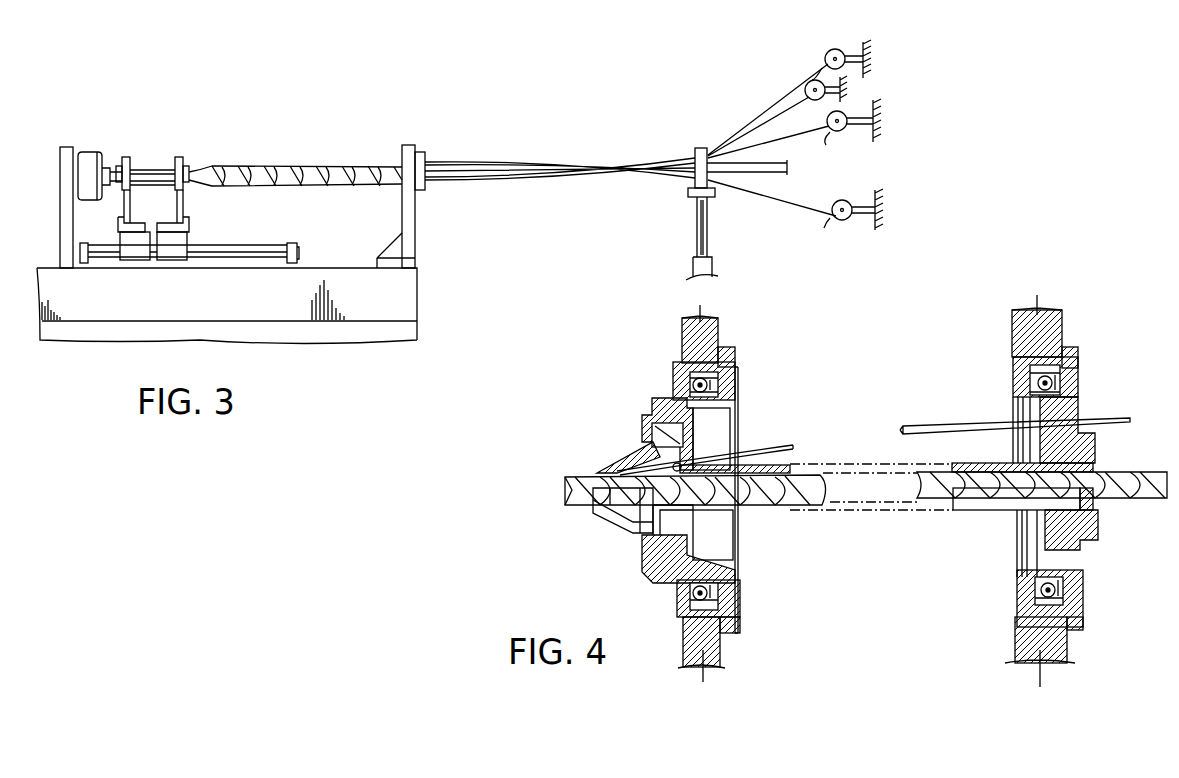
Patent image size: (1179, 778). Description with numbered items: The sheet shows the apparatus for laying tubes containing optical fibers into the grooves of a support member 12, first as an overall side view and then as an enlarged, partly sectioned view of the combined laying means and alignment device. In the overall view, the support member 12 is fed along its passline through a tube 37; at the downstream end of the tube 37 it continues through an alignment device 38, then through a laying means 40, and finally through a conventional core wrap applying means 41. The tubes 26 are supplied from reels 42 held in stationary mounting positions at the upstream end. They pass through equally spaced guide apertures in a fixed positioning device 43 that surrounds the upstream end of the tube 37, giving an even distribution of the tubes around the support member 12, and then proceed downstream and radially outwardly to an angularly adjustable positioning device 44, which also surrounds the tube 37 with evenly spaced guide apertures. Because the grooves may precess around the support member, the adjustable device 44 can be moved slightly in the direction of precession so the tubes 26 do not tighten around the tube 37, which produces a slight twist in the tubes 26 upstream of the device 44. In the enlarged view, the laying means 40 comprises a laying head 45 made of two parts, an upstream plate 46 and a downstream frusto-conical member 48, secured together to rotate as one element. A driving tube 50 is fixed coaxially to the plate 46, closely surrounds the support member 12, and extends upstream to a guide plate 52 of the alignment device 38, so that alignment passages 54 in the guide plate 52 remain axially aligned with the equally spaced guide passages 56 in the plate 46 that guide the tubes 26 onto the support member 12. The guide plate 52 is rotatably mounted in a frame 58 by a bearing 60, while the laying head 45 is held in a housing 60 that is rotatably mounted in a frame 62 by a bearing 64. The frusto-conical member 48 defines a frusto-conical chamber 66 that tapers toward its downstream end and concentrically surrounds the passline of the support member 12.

In FIG. 3, the support member 12 is at (767, 163).
In FIG. 4, the support member 12 is at (1144, 456).
In FIG. 3, the tubes 26 is at (747, 117).
In FIG. 4, the tubes 26 is at (963, 417).
In FIG. 3, the tube 37 is at (263, 170).
In FIG. 3, the alignment device 38 is at (186, 144).
In FIG. 4, the alignment device 38 is at (1093, 343).
In FIG. 3, the laying means 40 is at (129, 145).
In FIG. 4, the laying means 40 is at (747, 356).
In FIG. 3, the core wrap applying means 41 is at (90, 150).
In FIG. 3, the reels 42 is at (827, 52).
In FIG. 3, the fixed positioning device 43 is at (700, 148).
In FIG. 3, the angularly adjustable positioning device 44 is at (414, 141).
In FIG. 4, the laying head 45 is at (622, 432).
In FIG. 4, the plate 46 is at (687, 430).
In FIG. 4, the frusto-conical member 48 is at (617, 450).
In FIG. 4, the driving tube 50 is at (997, 460).
In FIG. 4, the guide plate 52 is at (1077, 380).
In FIG. 4, the alignment passages 54 is at (1080, 405).
In FIG. 4, the guide passages 56 is at (737, 443).
In FIG. 4, the frame 58 is at (1013, 330).
In FIG. 4, the bearing 60 is at (735, 400).
In FIG. 4, the frame 62 is at (687, 340).
In FIG. 4, the bearing 64 is at (677, 592).
In FIG. 4, the frusto-conical chamber 66 is at (643, 493).